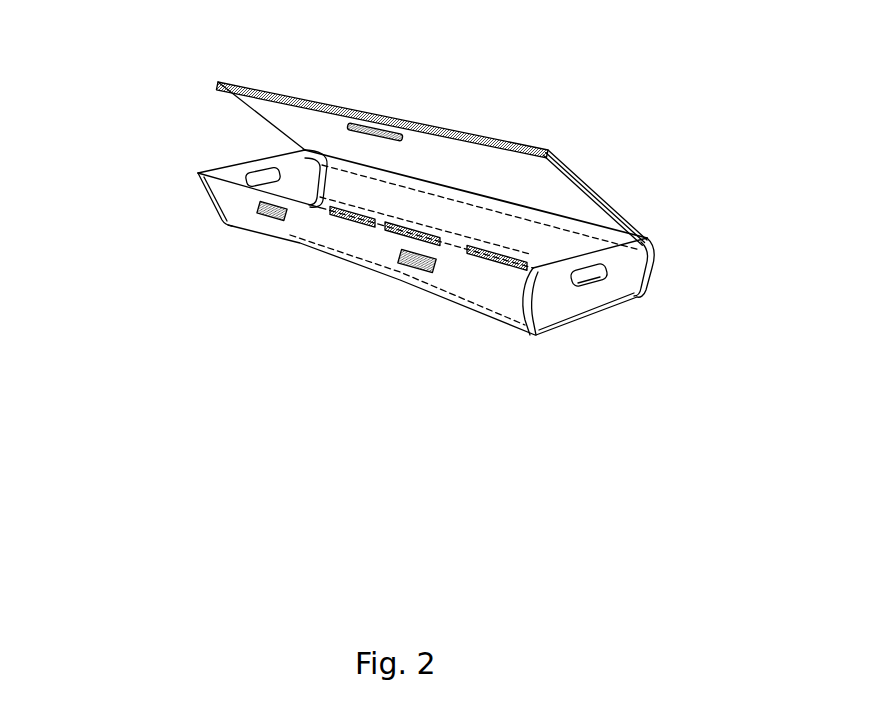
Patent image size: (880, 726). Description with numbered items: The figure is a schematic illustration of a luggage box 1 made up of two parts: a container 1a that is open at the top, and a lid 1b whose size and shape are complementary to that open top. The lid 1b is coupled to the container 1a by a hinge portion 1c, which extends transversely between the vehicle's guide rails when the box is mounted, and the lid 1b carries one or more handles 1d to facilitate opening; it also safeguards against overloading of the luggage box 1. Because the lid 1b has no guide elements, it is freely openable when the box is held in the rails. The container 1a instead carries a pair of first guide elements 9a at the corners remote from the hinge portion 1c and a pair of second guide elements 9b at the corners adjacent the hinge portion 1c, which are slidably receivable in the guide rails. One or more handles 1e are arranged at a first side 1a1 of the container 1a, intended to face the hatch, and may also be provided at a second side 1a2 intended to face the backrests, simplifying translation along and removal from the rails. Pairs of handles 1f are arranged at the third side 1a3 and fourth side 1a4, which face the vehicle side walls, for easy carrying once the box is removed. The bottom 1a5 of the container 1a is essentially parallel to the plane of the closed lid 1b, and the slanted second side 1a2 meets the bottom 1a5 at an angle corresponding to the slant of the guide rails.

The luggage box 1 is at (467, 87).
The container 1a is at (200, 208).
The first side 1a1 is at (343, 242).
The second side 1a2 is at (651, 268).
The third side 1a3 is at (215, 168).
The fourth side 1a4 is at (597, 312).
The bottom 1a5 is at (581, 322).
The lid 1b is at (293, 86).
The hinge portion 1c is at (603, 217).
The handle 1d is at (365, 123).
The handle 1e is at (264, 222).
The handle 1f is at (245, 172).
The first guide element 9a is at (205, 171).
The second guide element 9b is at (303, 150).